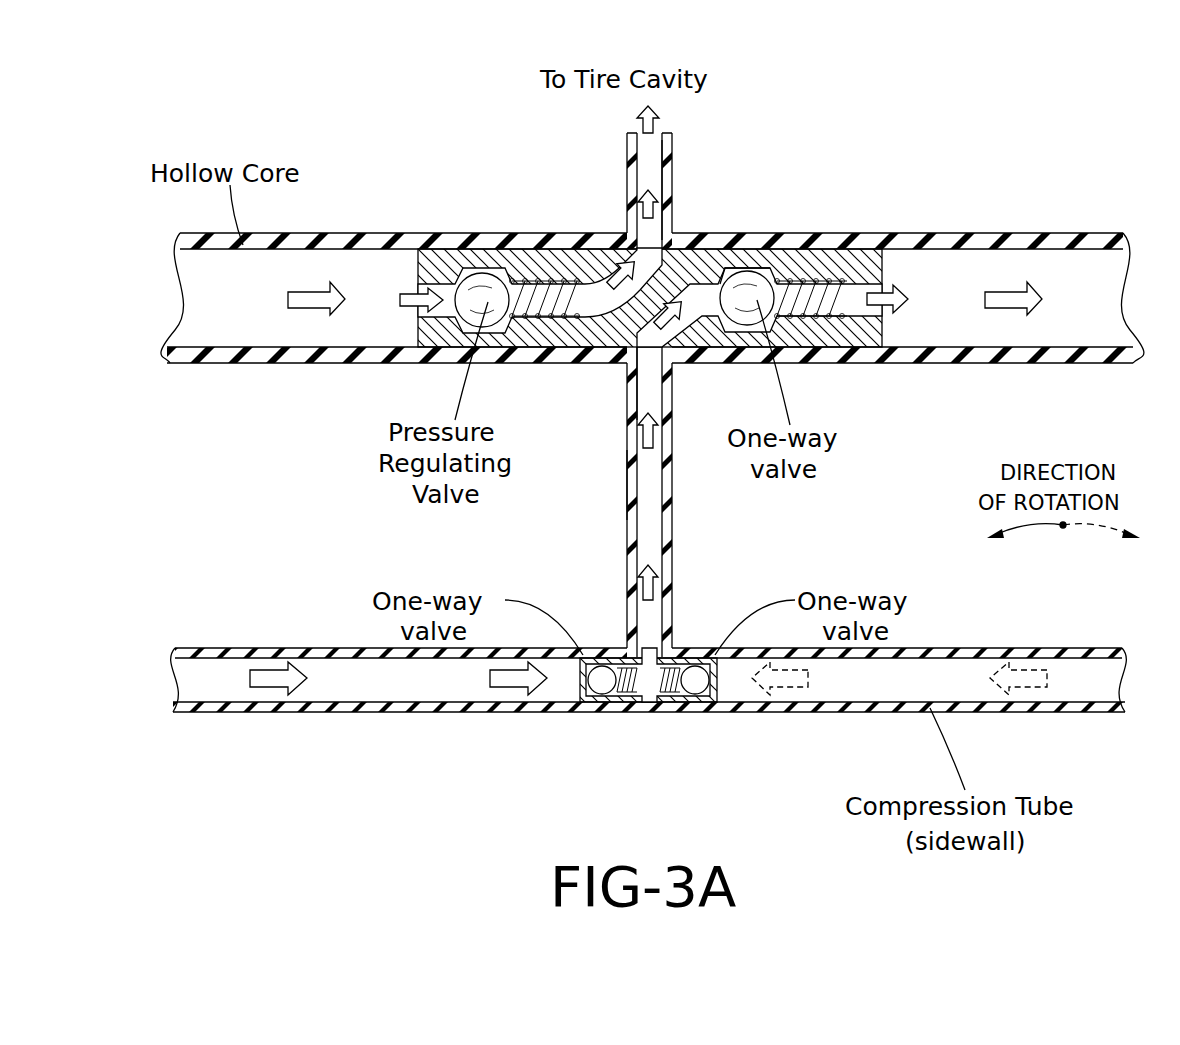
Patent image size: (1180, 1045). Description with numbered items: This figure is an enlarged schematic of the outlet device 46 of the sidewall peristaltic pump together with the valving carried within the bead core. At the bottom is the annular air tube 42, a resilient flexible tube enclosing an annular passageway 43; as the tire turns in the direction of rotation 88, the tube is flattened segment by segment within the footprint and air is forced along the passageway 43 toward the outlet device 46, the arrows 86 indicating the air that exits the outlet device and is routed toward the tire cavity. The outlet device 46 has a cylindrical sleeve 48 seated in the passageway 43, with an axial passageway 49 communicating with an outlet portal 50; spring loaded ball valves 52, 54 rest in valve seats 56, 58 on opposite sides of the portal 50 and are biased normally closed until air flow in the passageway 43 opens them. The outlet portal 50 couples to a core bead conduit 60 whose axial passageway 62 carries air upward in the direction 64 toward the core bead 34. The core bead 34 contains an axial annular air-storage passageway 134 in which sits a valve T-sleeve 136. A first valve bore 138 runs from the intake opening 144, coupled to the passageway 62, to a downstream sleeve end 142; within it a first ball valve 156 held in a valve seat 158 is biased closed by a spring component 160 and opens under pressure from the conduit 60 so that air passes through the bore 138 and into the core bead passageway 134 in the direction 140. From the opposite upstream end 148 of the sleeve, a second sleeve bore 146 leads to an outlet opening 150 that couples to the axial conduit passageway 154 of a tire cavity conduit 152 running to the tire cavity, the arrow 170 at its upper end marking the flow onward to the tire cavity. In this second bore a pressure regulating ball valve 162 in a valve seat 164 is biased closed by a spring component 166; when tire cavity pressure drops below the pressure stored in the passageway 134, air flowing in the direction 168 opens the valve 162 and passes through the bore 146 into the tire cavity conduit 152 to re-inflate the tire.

The outlet device 46 is at (245, 74).
The core bead 34 is at (967, 233).
The axial annular air-storage passageway 134 is at (1072, 282).
The valve T-sleeve 136 is at (832, 244).
The first valve bore 138 is at (860, 322).
The direction of air flow into core bead passageway 140 is at (1005, 296).
The downstream sleeve end 142 is at (883, 262).
The intake opening 144 is at (648, 372).
The second sleeve bore 146 is at (592, 282).
The upstream end of the sleeve 148 is at (417, 272).
The outlet opening 150 is at (652, 247).
The tire cavity conduit 152 is at (668, 160).
The axial conduit passageway 154 is at (645, 160).
The first ball valve 156 is at (776, 258).
The valve seat 158 is at (745, 327).
The spring component 160 is at (833, 316).
The pressure regulating valve 162 is at (482, 266).
The valve seat 164 is at (467, 330).
The spring component 166 is at (537, 317).
The direction of air flow 168 is at (305, 300).
The air flow to tire cavity 170 is at (645, 122).
The annular air tube 42 is at (370, 712).
The annular passageway 43 is at (393, 686).
The cylindrical sleeve 48 is at (697, 702).
The axial passageway 49 is at (648, 684).
The outlet portal 50 is at (655, 648).
The spring loaded ball valve 52 is at (693, 650).
The spring loaded ball valve 54 is at (598, 650).
The valve seat 56 is at (668, 697).
The valve seat 58 is at (626, 697).
The core bead conduit 60 is at (672, 515).
The axial passageway 62 is at (650, 480).
The direction of air flow 64 is at (645, 435).
The air flow arrow 86 is at (277, 681).
The direction of rotation 88 is at (1037, 528).